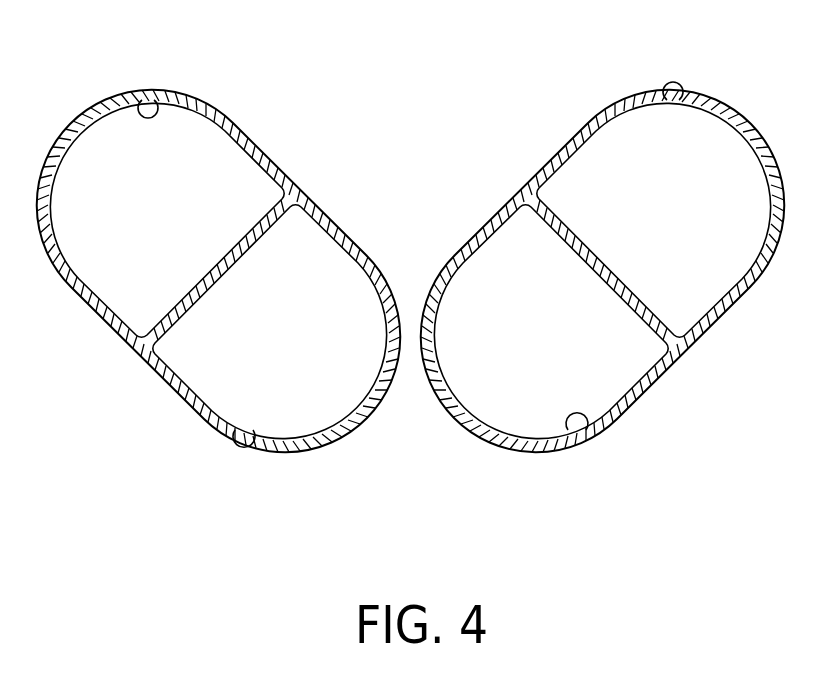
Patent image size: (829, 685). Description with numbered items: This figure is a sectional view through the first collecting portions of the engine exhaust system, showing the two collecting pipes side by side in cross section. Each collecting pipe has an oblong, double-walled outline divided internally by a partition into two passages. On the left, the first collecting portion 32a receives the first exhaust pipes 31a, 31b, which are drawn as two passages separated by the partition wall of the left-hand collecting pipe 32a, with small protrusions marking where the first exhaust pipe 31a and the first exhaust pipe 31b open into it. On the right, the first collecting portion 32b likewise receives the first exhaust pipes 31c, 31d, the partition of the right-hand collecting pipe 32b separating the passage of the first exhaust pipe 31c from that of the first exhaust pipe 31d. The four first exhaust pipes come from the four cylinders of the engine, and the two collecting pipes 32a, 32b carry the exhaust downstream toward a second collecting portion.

The first exhaust pipe 31a is at (682, 108).
The first exhaust pipe 31b is at (590, 430).
The first exhaust pipe 31c is at (230, 430).
The first exhaust pipe 31d is at (134, 108).
The first collecting portion 32a is at (558, 148).
The first collecting portion 32b is at (265, 152).